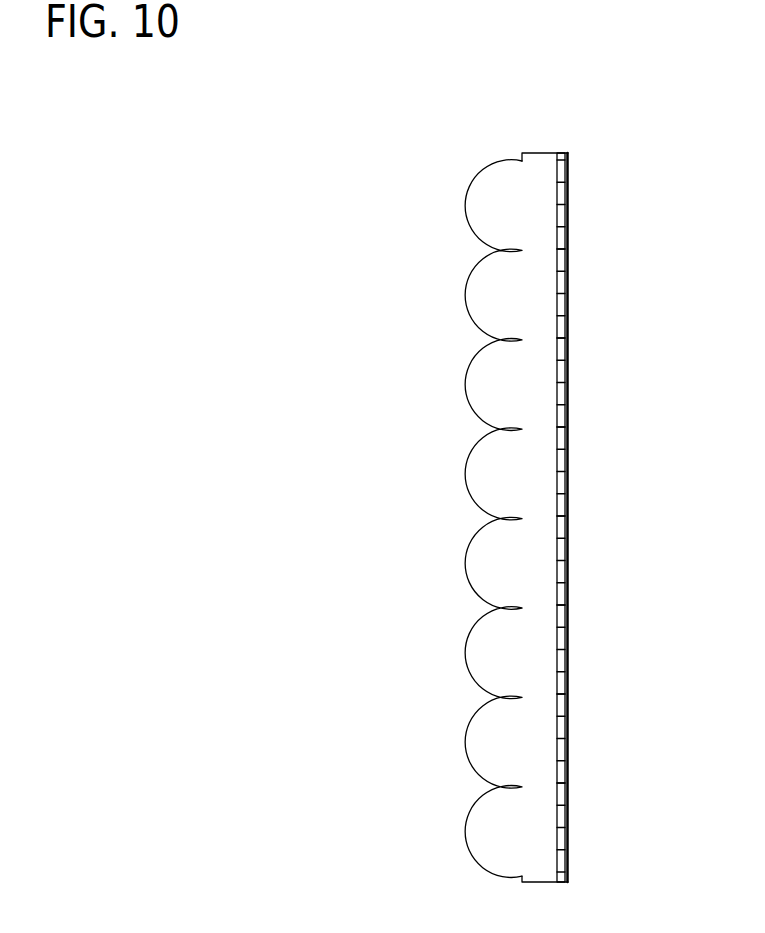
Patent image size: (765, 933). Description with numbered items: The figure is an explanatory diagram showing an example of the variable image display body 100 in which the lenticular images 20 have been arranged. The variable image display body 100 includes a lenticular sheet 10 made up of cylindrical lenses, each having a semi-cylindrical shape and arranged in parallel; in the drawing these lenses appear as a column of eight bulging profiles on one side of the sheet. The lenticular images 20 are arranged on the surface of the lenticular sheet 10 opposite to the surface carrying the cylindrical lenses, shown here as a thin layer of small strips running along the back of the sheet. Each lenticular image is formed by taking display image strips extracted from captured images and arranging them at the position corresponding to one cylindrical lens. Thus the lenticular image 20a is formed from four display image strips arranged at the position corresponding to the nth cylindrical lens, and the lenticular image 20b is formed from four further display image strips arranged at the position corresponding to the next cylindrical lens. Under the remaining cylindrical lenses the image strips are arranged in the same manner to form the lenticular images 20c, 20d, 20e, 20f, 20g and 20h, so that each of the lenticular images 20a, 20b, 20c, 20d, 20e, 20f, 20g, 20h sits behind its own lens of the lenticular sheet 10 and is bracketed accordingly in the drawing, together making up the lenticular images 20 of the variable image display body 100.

The variable image display body 100 is at (466, 237).
The lenticular sheet 10 is at (521, 158).
The lenticular images 20 is at (567, 153).
The lenticular image 20a is at (571, 793).
The lenticular image 20b is at (571, 702).
The lenticular image 20c is at (571, 611).
The lenticular image 20d is at (571, 520).
The lenticular image 20e is at (571, 428).
The lenticular image 20f is at (571, 337).
The lenticular image 20g is at (571, 246).
The lenticular image 20h is at (571, 155).